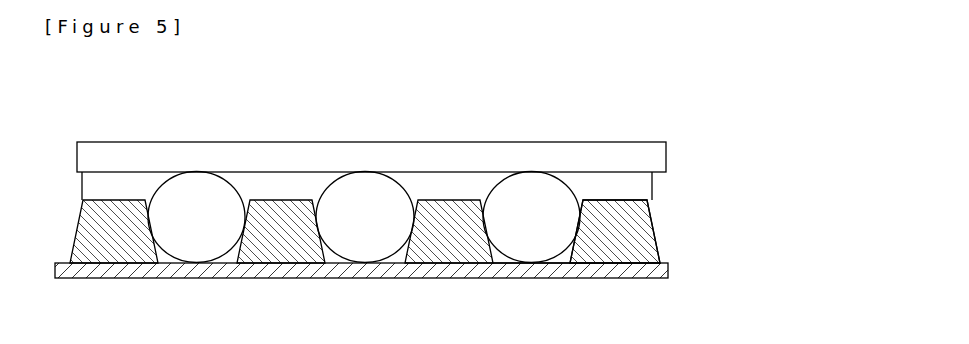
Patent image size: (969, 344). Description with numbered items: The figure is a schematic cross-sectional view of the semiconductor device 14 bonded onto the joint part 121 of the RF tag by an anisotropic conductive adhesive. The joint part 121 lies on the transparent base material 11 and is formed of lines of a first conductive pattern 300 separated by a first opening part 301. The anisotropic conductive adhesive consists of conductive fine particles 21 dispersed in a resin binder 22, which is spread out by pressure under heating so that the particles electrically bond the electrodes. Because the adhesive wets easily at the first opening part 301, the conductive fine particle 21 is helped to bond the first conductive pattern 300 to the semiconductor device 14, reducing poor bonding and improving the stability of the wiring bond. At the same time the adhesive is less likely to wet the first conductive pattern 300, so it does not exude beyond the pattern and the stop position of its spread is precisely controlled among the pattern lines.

The semiconductor device 14 is at (135, 155).
The conductive fine particle 21 is at (215, 192).
The resin binder 22 is at (312, 180).
The first conductive pattern 300 is at (648, 243).
The joint part 121 is at (706, 244).
The transparent base material 11 is at (382, 272).
The first opening part 301 is at (562, 262).